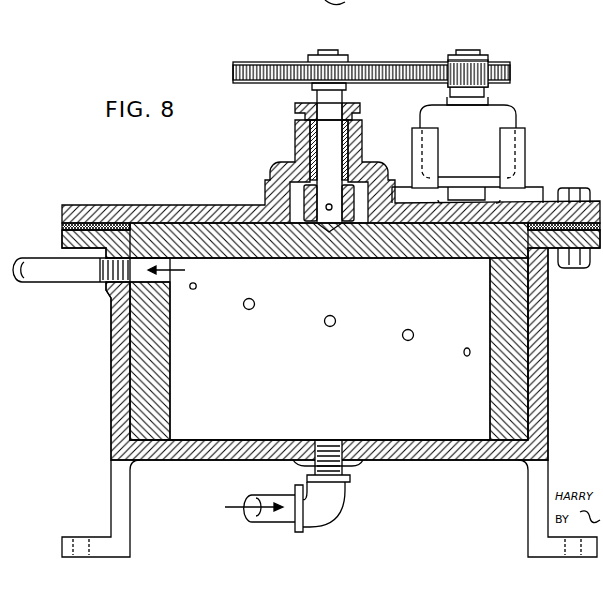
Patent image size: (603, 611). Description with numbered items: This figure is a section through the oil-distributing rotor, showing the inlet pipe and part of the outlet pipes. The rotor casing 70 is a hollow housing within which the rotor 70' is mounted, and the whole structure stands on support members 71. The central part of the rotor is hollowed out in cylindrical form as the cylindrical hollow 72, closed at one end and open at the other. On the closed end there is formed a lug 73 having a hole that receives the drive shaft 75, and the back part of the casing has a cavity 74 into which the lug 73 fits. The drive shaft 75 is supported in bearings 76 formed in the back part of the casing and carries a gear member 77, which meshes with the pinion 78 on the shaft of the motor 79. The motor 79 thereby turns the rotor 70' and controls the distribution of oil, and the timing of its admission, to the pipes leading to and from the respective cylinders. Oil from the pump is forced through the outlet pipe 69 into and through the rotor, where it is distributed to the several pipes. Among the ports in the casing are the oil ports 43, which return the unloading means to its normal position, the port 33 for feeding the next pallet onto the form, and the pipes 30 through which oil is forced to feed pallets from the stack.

The pipes 30 is at (408, 341).
The pallet feeding port 33 is at (249, 310).
The oil ports 43 is at (34, 257).
The outlet pipe 69 is at (337, 512).
The rotor casing 70 is at (304, 354).
The rotor 70' is at (331, 262).
The support members 71 is at (110, 493).
The cylindrical hollow 72 is at (165, 370).
The lug 73 is at (300, 202).
The cavity 74 is at (310, 181).
The drive shaft 75 is at (318, 94).
The bearings 76 is at (297, 108).
The gear member 77 is at (253, 62).
The pinion 78 is at (510, 68).
The motor 79 is at (518, 118).